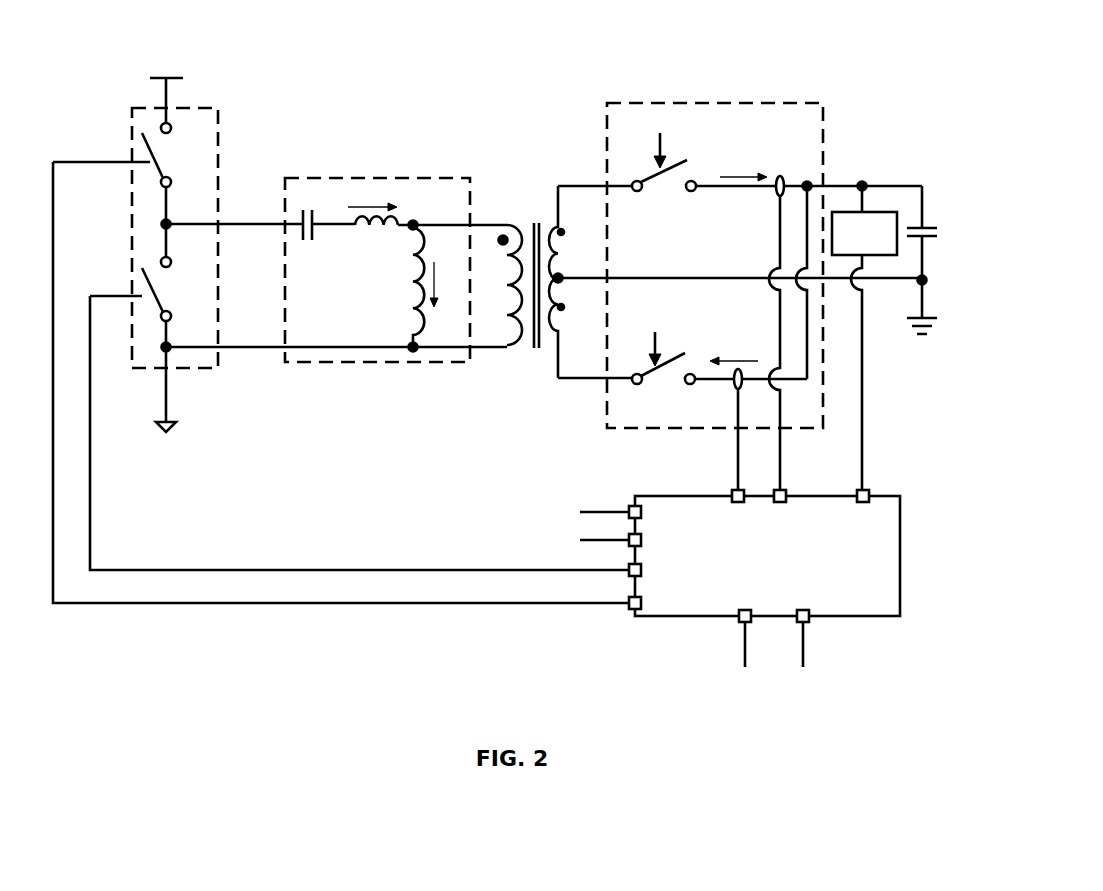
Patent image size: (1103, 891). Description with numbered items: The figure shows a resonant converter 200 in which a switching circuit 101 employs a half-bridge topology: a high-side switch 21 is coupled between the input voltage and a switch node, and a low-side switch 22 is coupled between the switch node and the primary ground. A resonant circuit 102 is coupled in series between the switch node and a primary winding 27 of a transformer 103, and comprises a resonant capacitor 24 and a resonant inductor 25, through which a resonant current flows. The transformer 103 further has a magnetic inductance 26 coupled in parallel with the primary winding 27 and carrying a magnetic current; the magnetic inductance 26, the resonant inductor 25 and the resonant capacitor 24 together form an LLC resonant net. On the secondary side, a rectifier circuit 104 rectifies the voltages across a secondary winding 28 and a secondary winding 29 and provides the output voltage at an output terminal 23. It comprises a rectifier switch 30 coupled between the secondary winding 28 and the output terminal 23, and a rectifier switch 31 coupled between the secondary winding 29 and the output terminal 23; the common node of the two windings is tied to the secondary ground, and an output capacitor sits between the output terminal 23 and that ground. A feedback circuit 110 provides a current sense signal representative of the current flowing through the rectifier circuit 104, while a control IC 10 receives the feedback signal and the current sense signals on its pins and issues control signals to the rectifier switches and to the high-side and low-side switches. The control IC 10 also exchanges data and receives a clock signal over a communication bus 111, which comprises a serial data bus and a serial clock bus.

The resonant converter 200 is at (848, 73).
The switching circuit 101 is at (218, 136).
The resonant circuit 102 is at (382, 178).
The transformer 103 is at (540, 218).
The rectifier circuit 104 is at (720, 103).
The control IC 10 is at (755, 569).
The high-side switch 21 is at (170, 155).
The low-side switch 22 is at (170, 289).
The output terminal 23 is at (818, 180).
The resonant capacitor 24 is at (315, 242).
The resonant inductor 25 is at (376, 237).
The magnetic inductance 26 is at (404, 286).
The primary winding 27 is at (502, 285).
The secondary winding 28 is at (572, 233).
The secondary winding 29 is at (576, 328).
The rectifier switch 30 is at (664, 190).
The rectifier switch 31 is at (663, 381).
The feedback circuit 110 is at (848, 245).
The communication bus 111 is at (745, 667).